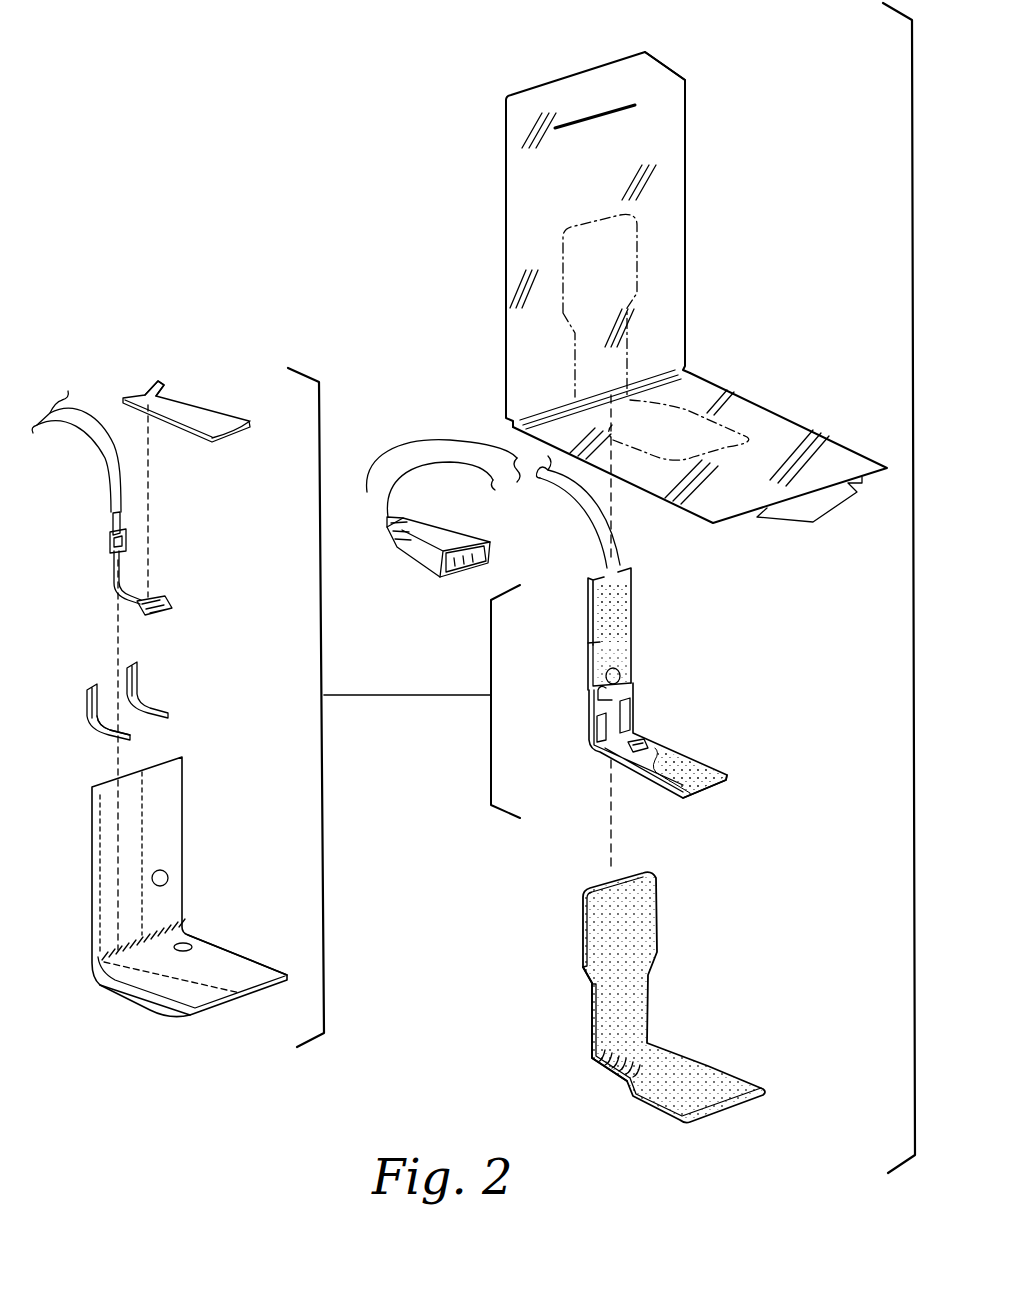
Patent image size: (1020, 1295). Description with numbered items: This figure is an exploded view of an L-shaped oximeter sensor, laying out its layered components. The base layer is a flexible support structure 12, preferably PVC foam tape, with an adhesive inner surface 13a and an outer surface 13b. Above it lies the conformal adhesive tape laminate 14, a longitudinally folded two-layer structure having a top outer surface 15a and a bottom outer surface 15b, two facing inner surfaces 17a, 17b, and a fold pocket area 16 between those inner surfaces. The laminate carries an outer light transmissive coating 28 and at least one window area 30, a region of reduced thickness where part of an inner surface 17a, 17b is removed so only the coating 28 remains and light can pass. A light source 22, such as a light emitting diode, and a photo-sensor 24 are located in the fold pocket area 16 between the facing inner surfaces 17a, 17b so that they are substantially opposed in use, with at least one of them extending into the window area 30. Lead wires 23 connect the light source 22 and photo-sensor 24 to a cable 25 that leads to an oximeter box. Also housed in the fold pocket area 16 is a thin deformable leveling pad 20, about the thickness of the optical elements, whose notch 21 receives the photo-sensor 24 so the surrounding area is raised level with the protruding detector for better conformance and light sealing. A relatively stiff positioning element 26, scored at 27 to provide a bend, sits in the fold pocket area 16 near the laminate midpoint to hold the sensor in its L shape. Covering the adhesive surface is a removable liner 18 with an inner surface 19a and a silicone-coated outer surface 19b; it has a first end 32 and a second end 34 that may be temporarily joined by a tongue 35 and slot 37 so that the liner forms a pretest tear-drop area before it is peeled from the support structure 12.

The flexible support structure 12 is at (630, 925).
The inner surface of support structure 13a is at (610, 1028).
The outer surface of support structure 13b is at (590, 976).
The conformal adhesive tape laminate 14 is at (165, 813).
The top outer surface of tape laminate 15a is at (625, 623).
The bottom outer surface of tape laminate 15b is at (600, 648).
The fold pocket area 16 is at (708, 786).
The inner surface of tape laminate 17a is at (172, 984).
The inner surface of tape laminate 17b is at (238, 970).
The removable liner 18 is at (670, 180).
The inner surface of liner 19a is at (538, 172).
The outer surface of liner 19b is at (515, 320).
The leveling pad 20 is at (188, 407).
The notch 21 is at (143, 393).
The light source 22 is at (113, 538).
The lead wires 23 is at (118, 578).
The photo-sensor 24 is at (150, 597).
The cable 25 is at (112, 463).
The positioning element 26 is at (153, 703).
The score 27 is at (102, 733).
The light transmissive coating 28 is at (672, 750).
The window area 30 is at (168, 874).
The first end of liner 32 is at (643, 72).
The second end of liner 34 is at (825, 453).
The tongue 35 is at (810, 510).
The slot 37 is at (580, 118).